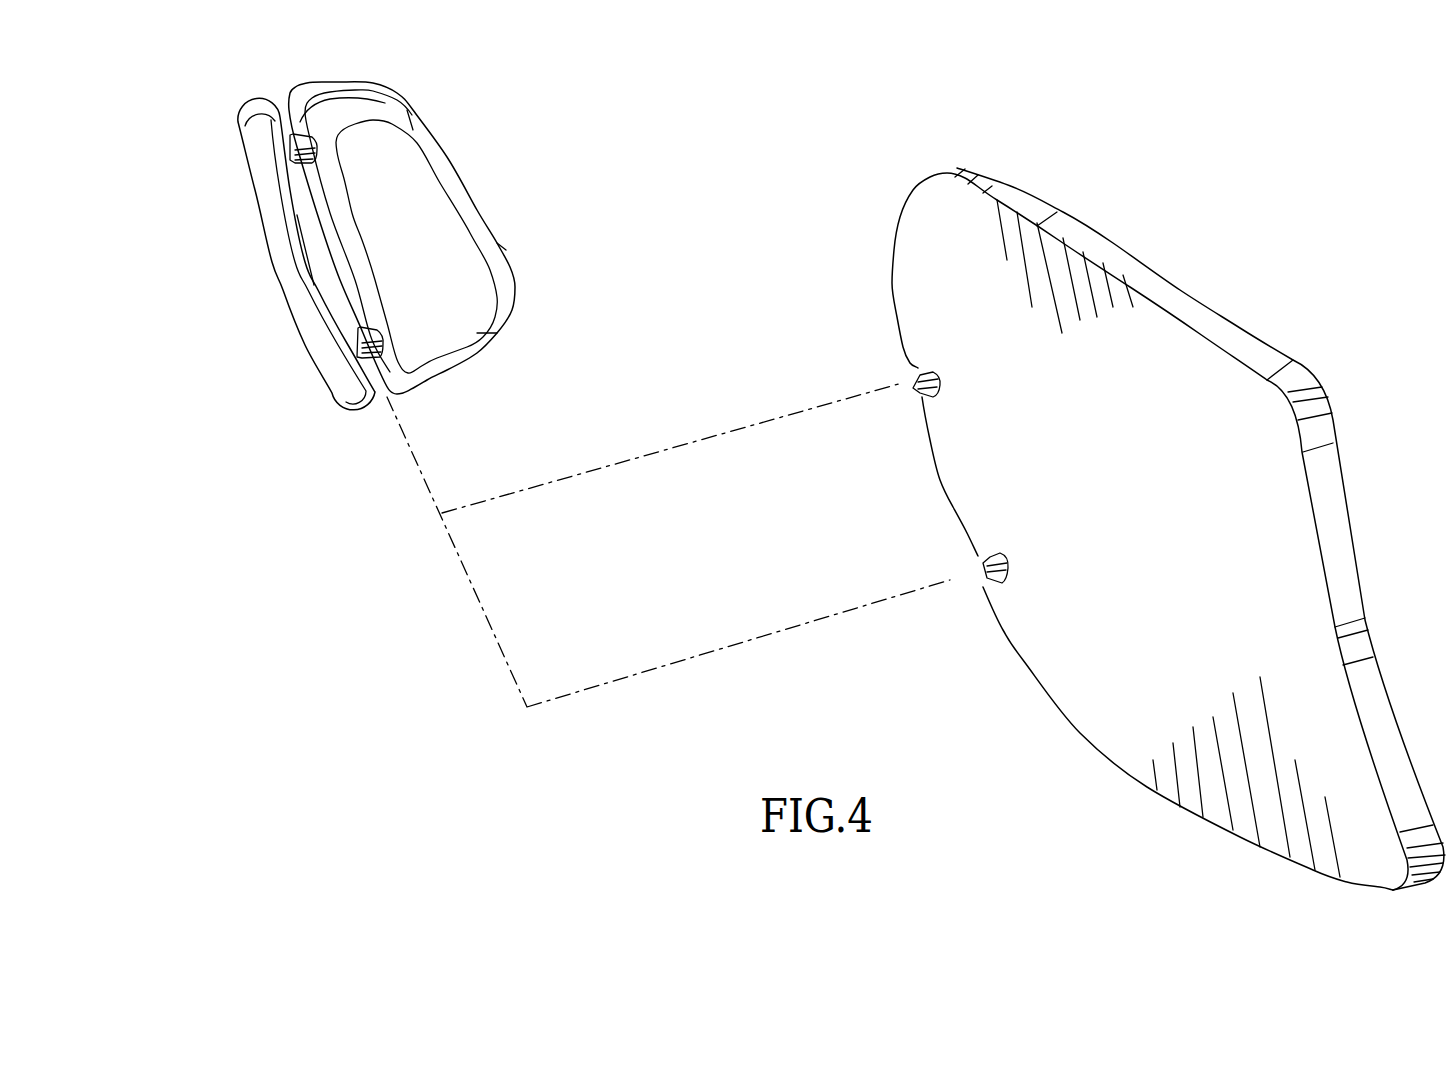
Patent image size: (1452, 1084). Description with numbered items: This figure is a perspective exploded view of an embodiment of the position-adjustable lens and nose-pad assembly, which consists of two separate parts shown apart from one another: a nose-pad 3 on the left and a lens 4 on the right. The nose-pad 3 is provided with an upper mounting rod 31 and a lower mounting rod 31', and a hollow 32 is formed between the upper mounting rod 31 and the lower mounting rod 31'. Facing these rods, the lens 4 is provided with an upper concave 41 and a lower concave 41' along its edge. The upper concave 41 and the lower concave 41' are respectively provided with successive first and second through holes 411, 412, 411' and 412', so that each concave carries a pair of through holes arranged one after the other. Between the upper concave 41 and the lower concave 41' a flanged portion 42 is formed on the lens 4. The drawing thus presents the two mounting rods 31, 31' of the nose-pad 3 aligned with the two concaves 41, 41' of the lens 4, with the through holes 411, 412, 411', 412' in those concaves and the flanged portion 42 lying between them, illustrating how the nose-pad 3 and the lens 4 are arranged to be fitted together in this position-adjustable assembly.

The nose-pad 3 is at (433, 103).
The upper mounting rod 31 is at (211, 126).
The lower mounting rod 31' is at (285, 414).
The hollow 32 is at (328, 262).
The lens 4 is at (1153, 260).
The upper concave 41 is at (829, 352).
The first through hole 411 is at (834, 435).
The second through hole 412 is at (843, 465).
The flanged portion 42 is at (940, 480).
The lower concave 41' is at (905, 639).
The first through hole 411' is at (1037, 471).
The second through hole 412' is at (1075, 489).